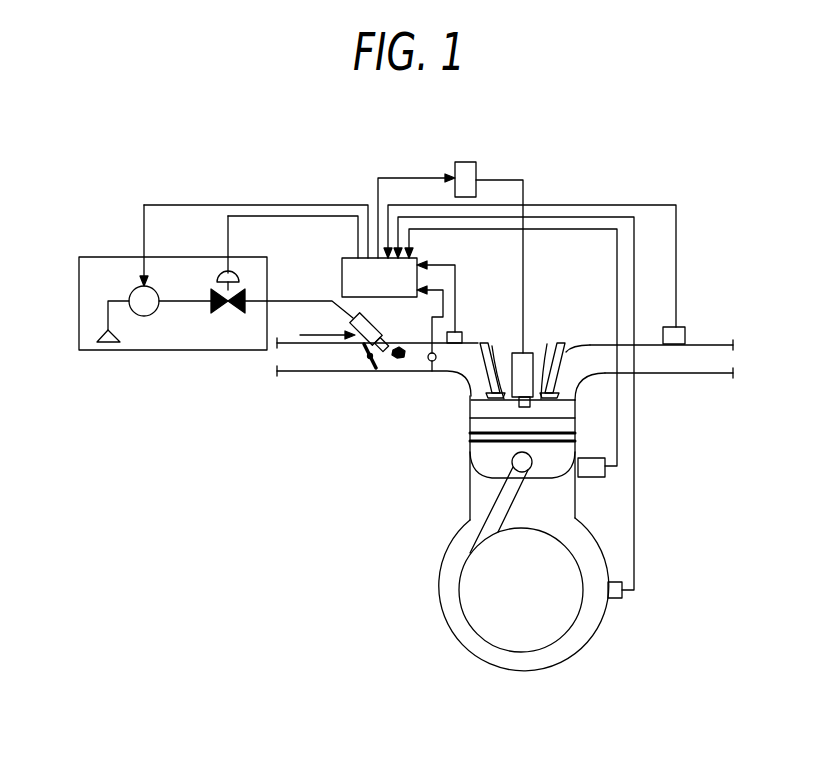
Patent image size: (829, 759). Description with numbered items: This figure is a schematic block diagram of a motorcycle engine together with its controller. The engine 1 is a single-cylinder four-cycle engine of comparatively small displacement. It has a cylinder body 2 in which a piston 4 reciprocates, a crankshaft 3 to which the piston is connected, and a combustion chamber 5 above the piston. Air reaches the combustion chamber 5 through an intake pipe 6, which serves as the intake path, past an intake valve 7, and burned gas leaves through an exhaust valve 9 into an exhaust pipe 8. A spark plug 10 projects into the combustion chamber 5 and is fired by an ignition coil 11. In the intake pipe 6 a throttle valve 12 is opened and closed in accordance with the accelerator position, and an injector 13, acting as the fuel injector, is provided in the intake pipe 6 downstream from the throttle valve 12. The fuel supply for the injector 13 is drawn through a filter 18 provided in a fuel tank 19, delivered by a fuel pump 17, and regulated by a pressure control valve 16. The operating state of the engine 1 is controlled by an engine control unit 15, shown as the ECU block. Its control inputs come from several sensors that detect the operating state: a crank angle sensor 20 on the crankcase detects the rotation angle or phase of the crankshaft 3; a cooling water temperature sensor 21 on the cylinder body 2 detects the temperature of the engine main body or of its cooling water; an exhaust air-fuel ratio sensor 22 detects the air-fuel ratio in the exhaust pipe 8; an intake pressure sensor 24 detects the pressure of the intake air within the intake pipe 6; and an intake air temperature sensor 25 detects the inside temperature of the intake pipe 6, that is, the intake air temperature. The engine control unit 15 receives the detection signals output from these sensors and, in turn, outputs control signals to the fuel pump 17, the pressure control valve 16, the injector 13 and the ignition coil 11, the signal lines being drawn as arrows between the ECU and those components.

The engine 1 is at (366, 483).
The cylinder body 2 is at (468, 508).
The crankshaft 3 is at (557, 640).
The piston 4 is at (492, 476).
The combustion chamber 5 is at (577, 410).
The intake pipe 6 is at (312, 372).
The intake valve 7 is at (488, 338).
The exhaust pipe 8 is at (703, 373).
The exhaust valve 9 is at (565, 340).
The spark plug 10 is at (527, 353).
The ignition coil 11 is at (478, 168).
The throttle valve 12 is at (373, 372).
The injector 13 is at (372, 321).
The engine control unit 15 is at (420, 259).
The pressure control valve 16 is at (232, 313).
The fuel pump 17 is at (148, 316).
The filter 18 is at (108, 343).
The fuel tank 19 is at (98, 257).
The crank angle sensor 20 is at (614, 600).
The cooling water temperature sensor 21 is at (592, 478).
The exhaust air-fuel ratio sensor 22 is at (688, 333).
The intake pressure sensor 24 is at (431, 372).
The intake air temperature sensor 25 is at (461, 331).